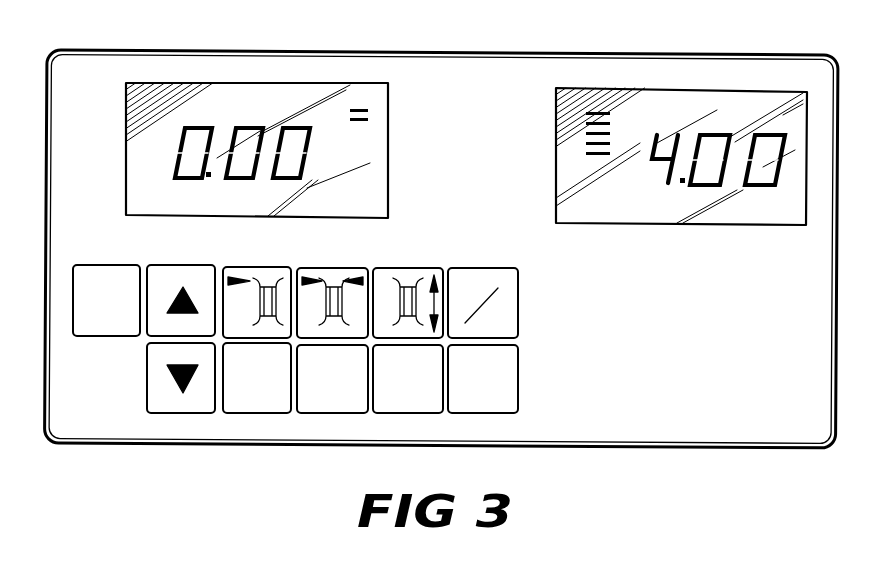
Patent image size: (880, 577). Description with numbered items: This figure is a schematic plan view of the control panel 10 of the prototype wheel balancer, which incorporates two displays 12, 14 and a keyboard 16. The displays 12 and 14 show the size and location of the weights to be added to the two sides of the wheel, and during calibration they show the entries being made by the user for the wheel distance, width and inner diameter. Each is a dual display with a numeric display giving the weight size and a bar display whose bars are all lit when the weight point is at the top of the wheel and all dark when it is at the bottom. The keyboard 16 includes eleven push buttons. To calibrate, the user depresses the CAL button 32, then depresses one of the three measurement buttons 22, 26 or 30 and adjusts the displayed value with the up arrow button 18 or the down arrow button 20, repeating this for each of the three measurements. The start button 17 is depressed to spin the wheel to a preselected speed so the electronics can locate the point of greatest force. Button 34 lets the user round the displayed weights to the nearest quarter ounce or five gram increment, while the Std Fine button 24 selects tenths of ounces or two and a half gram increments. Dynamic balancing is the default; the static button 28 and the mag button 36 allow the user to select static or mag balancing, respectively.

The control panel 10 is at (248, 50).
The display 12 is at (690, 204).
The display 14 is at (382, 153).
The keyboard 16 is at (537, 262).
The start button 17 is at (115, 272).
The up arrow button 18 is at (193, 277).
The down arrow button 20 is at (180, 408).
The measurement button 22 is at (268, 276).
The Std Fine button 24 is at (258, 410).
The measurement button 26 is at (345, 276).
The static button 28 is at (337, 408).
The measurement button 30 is at (423, 276).
The CAL button 32 is at (413, 408).
The button 34 is at (490, 278).
The mag button 36 is at (491, 408).